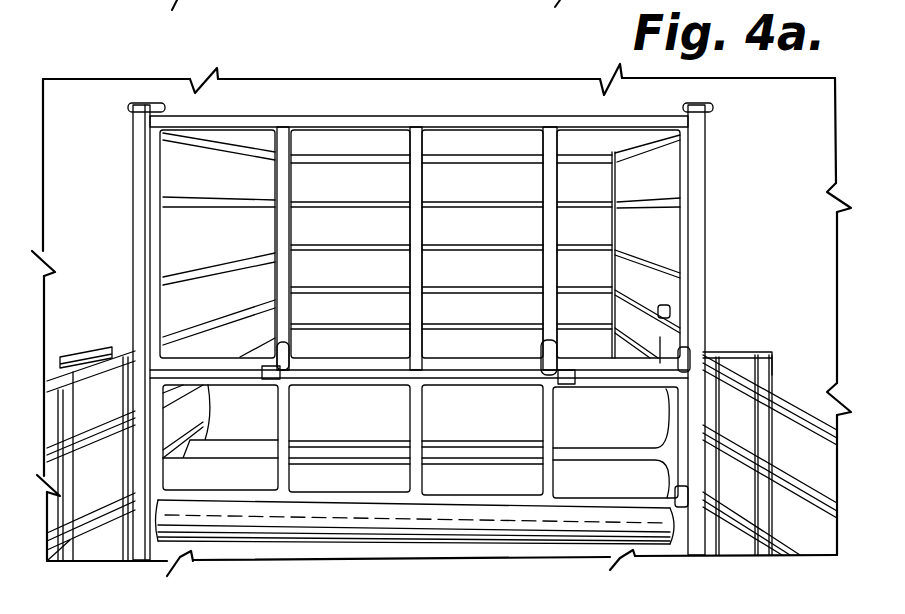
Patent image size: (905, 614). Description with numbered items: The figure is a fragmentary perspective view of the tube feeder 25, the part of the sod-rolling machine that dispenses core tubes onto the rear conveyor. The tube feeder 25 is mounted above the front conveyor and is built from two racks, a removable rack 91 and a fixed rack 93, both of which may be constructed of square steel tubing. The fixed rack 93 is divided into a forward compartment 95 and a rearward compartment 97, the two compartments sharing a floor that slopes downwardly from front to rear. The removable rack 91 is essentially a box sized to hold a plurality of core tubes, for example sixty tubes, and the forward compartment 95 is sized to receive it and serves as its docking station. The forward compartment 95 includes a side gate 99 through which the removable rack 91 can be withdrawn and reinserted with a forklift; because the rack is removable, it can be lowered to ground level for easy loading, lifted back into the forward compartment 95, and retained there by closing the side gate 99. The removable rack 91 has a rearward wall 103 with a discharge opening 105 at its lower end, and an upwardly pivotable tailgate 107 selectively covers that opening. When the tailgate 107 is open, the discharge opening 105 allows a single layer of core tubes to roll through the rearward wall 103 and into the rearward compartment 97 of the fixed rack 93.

The tube feeder 25 is at (78, 236).
The removable rack 91 is at (515, 117).
The fixed rack 93 is at (62, 367).
The forward compartment 95 is at (92, 515).
The rearward compartment 97 is at (275, 297).
The side gate 99 is at (727, 340).
The rearward wall 103 is at (482, 117).
The discharge opening 105 is at (488, 378).
The tailgate 107 is at (424, 407).